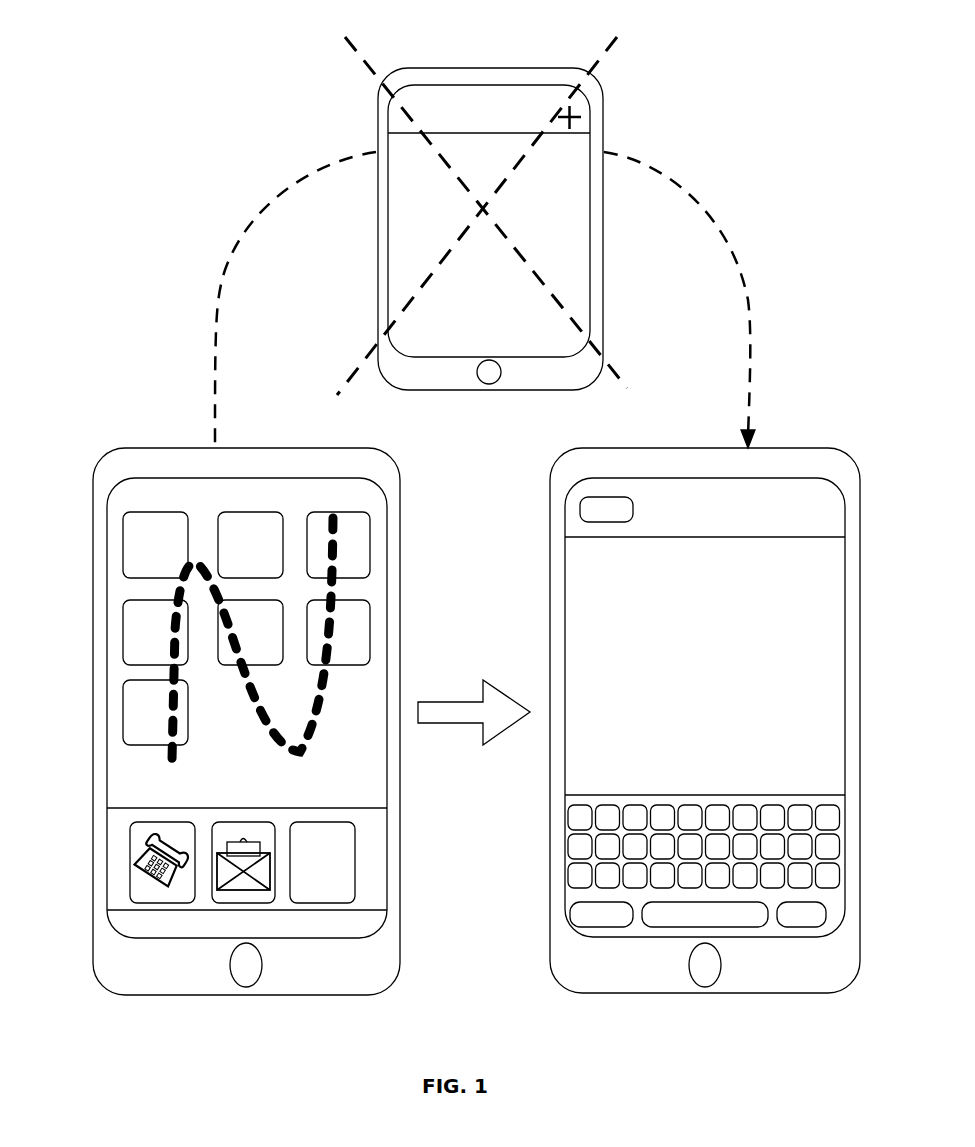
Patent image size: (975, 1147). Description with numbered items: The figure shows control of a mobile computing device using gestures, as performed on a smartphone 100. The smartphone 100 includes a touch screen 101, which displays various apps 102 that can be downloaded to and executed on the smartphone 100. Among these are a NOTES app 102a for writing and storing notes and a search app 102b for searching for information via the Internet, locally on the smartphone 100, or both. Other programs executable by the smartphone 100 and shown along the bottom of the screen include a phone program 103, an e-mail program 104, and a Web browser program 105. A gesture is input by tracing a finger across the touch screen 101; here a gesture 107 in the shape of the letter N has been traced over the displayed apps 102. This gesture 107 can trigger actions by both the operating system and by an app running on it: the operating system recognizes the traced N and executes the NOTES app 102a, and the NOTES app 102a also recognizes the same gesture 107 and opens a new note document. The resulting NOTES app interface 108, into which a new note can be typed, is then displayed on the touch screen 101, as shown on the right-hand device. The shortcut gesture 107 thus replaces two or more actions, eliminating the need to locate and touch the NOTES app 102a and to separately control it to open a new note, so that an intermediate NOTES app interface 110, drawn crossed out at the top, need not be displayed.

The smartphone 100 is at (330, 448).
The touch screen 101 is at (388, 526).
The apps 102 is at (137, 533).
The NOTES app 102a is at (268, 642).
The search app 102b is at (362, 610).
The phone program 103 is at (143, 892).
The e-mail program 104 is at (242, 830).
The Web browser program 105 is at (315, 830).
The gesture 107 is at (170, 760).
The NOTES app interface 108 is at (596, 692).
The NOTES app interface 110 is at (570, 267).